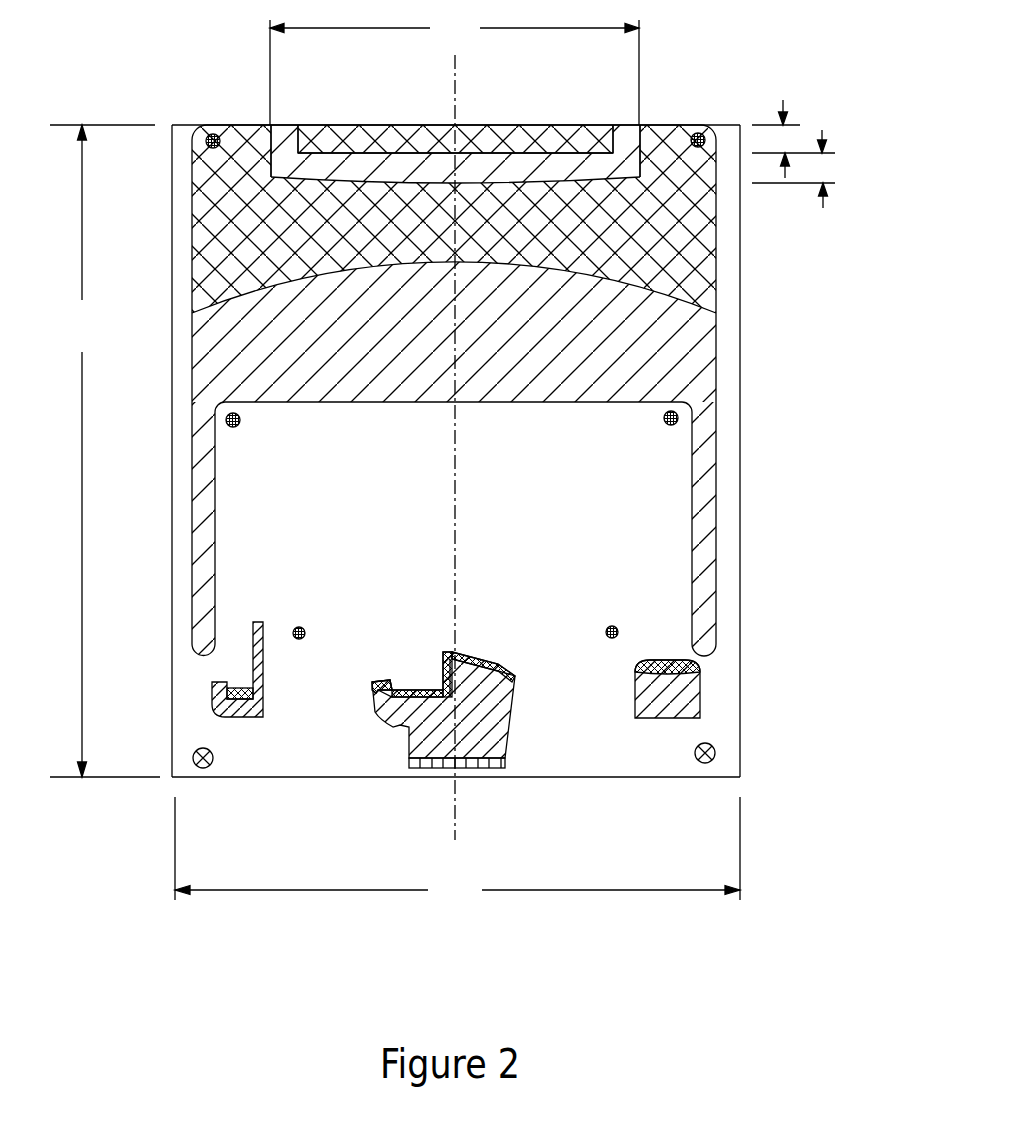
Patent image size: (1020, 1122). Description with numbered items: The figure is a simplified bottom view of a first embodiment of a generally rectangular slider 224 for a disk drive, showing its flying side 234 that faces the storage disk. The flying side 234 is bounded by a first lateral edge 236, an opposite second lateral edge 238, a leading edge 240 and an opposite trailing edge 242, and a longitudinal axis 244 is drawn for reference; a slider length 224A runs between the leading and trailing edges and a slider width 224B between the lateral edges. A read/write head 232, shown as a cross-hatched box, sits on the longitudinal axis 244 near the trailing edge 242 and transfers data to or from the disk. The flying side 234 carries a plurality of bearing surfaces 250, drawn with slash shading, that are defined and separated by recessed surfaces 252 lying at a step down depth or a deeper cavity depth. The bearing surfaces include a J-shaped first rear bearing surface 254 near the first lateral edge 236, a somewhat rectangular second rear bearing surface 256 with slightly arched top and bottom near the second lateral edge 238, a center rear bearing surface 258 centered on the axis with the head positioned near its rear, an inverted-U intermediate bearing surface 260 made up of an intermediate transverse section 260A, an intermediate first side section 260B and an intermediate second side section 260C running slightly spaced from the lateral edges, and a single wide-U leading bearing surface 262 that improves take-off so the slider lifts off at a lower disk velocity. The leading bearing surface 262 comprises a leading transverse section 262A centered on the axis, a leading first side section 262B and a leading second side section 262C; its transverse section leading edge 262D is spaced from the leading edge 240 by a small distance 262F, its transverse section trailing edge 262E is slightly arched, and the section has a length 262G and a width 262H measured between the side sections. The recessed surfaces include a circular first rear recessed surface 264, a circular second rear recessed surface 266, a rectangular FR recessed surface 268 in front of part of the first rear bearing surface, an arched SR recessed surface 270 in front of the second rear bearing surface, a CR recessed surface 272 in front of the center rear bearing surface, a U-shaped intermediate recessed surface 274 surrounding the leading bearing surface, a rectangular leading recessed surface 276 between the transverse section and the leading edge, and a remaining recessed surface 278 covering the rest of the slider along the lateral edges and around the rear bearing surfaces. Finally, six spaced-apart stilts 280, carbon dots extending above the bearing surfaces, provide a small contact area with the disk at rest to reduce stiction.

The slider 224 is at (482, 465).
The slider length 224A is at (105, 451).
The slider width 224B is at (457, 850).
The read/write head 232 is at (420, 746).
The flying side 234 is at (732, 629).
The first lateral edge 236 is at (172, 527).
The second lateral edge 238 is at (740, 450).
The leading edge 240 is at (182, 124).
The trailing edge 242 is at (240, 780).
The longitudinal axis 244 is at (460, 58).
The bearing surfaces 250 is at (455, 117).
The recessed surfaces 252 is at (557, 117).
The first rear bearing surface 254 is at (186, 673).
The second rear bearing surface 256 is at (725, 696).
The center rear bearing surface 258 is at (488, 735).
The intermediate bearing surface 260 is at (469, 391).
The intermediate transverse section 260A is at (640, 345).
The intermediate first side section 260B is at (212, 478).
The intermediate second side section 260C is at (710, 510).
The leading bearing surface 262 is at (522, 131).
The leading transverse section 262A is at (333, 165).
The leading first side section 262B is at (274, 134).
The leading second side section 262C is at (630, 148).
The transverse section leading edge 262D is at (603, 150).
The transverse section trailing edge 262E is at (600, 176).
The distance 262F is at (793, 126).
The length 262G is at (798, 180).
The width 262H is at (454, 71).
The first rear recessed surface 264 is at (203, 768).
The second rear recessed surface 266 is at (703, 765).
The FR recessed surface 268 is at (212, 683).
The SR recessed surface 270 is at (700, 670).
The CR recessed surface 272 is at (375, 712).
The intermediate recessed surface 274 is at (200, 228).
The leading recessed surface 276 is at (500, 126).
The remaining recessed surface 278 is at (728, 583).
The stilts 280 is at (692, 414).